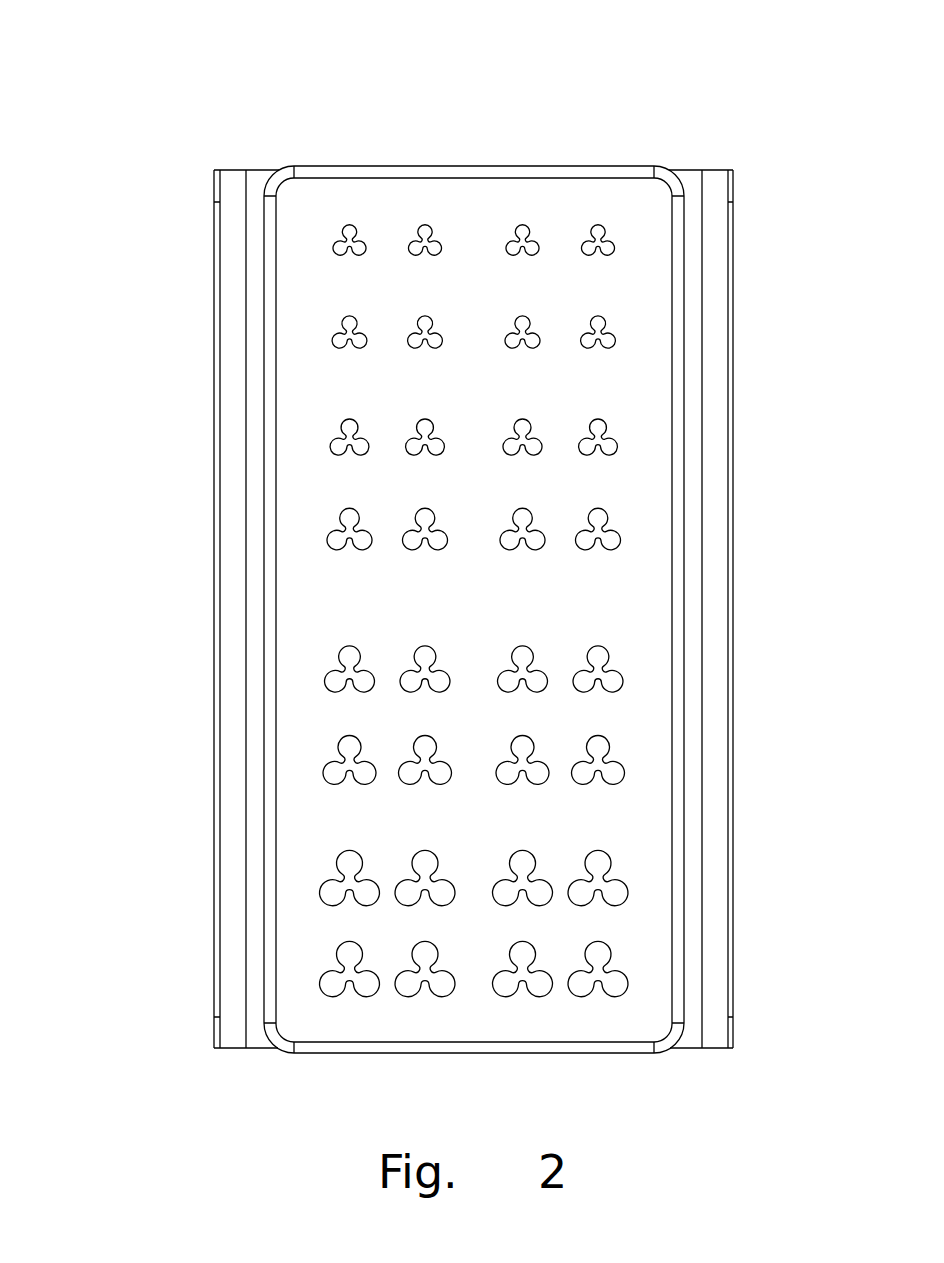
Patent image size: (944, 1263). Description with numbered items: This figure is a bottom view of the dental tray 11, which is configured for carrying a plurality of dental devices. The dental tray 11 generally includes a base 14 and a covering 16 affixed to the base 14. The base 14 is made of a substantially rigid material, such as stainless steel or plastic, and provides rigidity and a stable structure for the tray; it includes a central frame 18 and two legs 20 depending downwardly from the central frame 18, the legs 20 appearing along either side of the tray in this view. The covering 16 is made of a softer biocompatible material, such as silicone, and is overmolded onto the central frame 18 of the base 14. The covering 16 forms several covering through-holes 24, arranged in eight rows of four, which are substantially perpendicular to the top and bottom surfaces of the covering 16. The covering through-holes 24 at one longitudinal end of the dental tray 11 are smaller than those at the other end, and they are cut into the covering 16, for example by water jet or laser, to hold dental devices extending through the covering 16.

The dental tray 11 is at (160, 120).
The base 14 is at (258, 157).
The covering 16 is at (370, 190).
The central frame 18 is at (692, 172).
The legs 20 is at (213, 345).
The covering through-holes 24 is at (522, 225).